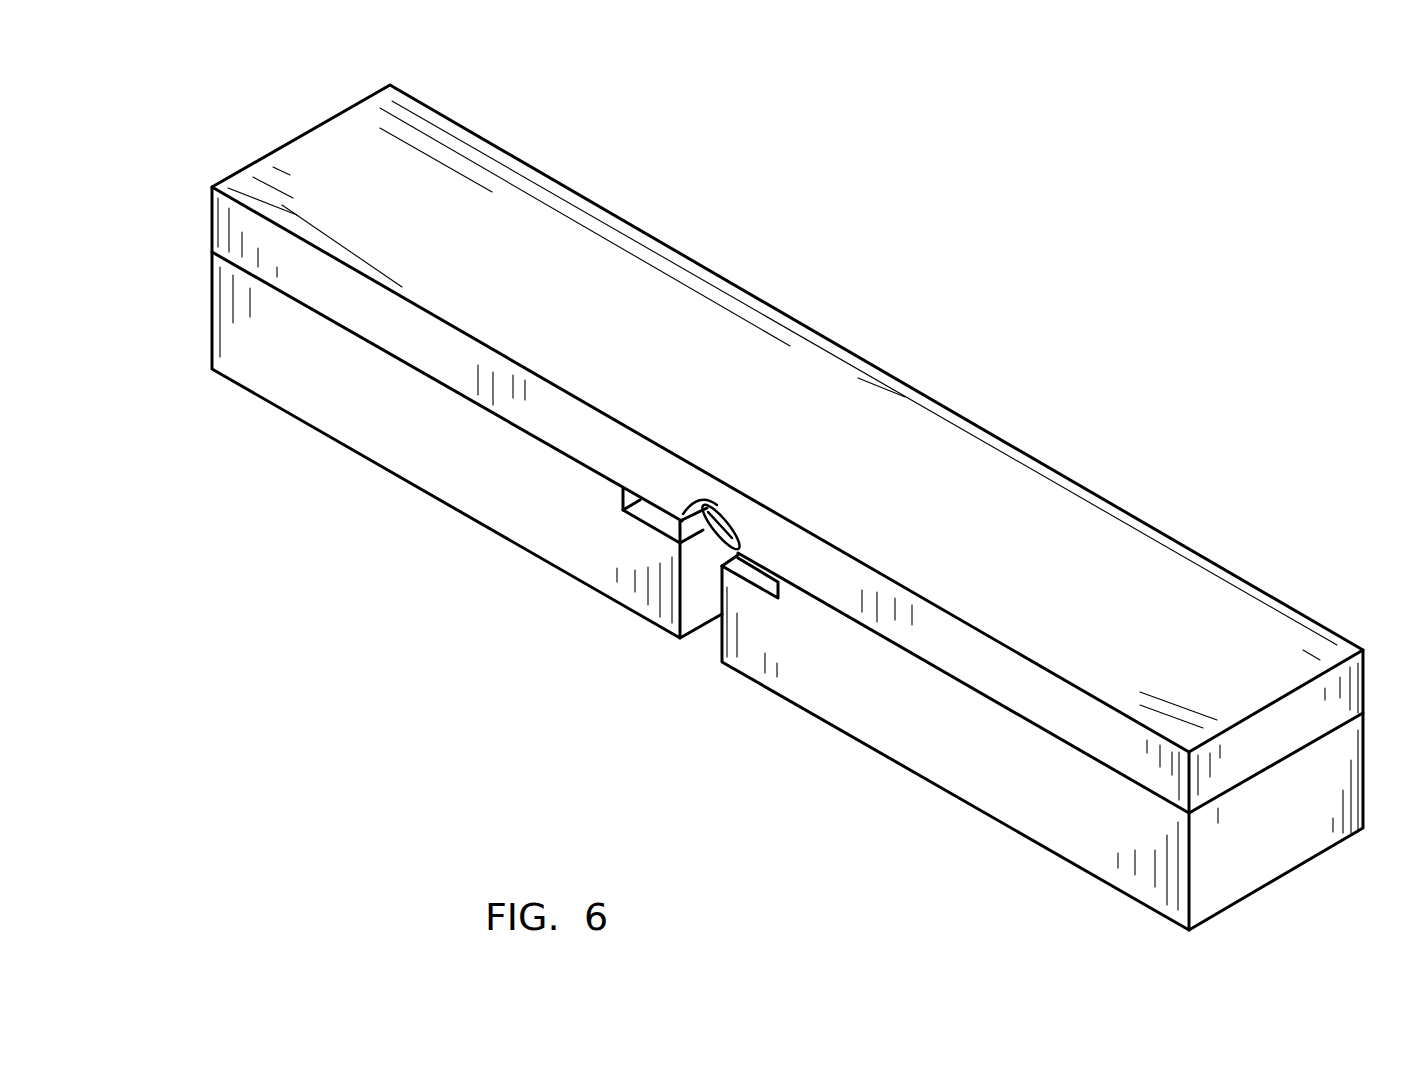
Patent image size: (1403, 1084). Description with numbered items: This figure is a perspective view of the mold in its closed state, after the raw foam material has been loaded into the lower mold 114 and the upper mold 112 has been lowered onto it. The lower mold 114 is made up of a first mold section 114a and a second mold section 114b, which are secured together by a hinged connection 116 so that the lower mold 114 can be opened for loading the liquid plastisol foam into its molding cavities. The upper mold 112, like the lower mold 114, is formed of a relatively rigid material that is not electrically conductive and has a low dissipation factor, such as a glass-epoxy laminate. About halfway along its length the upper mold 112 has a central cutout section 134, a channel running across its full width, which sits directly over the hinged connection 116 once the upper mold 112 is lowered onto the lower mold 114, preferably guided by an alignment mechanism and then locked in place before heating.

The upper mold 112 is at (1075, 555).
The lower mold 114 is at (787, 591).
The first mold section 114a is at (1000, 779).
The second mold section 114b is at (445, 465).
The hinged connection 116 is at (725, 548).
The central cutout section 134 is at (714, 505).